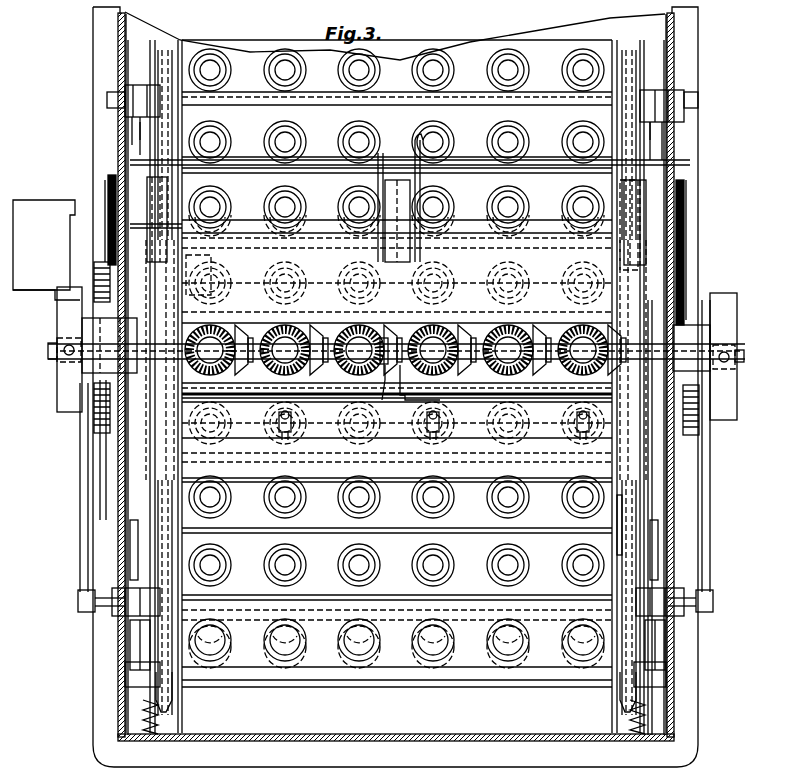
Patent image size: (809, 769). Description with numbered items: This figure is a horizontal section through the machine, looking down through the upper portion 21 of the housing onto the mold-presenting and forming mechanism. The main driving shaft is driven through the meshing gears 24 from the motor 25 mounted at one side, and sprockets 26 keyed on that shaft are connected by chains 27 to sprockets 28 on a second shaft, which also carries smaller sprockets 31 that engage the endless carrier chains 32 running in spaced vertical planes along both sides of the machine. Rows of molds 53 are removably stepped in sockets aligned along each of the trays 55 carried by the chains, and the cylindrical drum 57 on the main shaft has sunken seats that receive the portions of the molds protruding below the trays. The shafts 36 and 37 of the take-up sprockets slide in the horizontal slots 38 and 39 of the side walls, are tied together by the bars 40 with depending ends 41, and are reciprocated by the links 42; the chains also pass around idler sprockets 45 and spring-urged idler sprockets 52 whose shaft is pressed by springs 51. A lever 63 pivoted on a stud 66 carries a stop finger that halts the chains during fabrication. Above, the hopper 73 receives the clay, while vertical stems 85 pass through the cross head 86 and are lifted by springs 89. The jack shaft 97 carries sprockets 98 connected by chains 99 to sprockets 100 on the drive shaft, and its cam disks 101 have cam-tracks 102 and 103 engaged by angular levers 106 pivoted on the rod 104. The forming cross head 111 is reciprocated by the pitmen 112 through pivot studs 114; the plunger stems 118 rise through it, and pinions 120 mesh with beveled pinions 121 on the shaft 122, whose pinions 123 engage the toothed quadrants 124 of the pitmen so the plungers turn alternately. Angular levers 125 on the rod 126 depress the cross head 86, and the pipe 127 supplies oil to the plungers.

The upper portion of the housing 21 is at (672, 162).
The meshing gears 24 is at (94, 272).
The motor 25 is at (46, 250).
The sprockets 26 is at (125, 425).
The chains 27 is at (160, 497).
The sprockets 28 is at (640, 508).
The smaller sprockets 31 is at (135, 636).
The endless carrier chains 32 is at (158, 60).
The shaft 36 is at (105, 592).
The shaft 37 is at (515, 72).
The horizontal slot 38 is at (120, 658).
The horizontal slot 39 is at (120, 138).
The bars 40 is at (140, 127).
The depending ends 41 is at (140, 85).
The links 42 is at (80, 432).
The idler sprockets 45 is at (170, 52).
The springs 51 is at (140, 720).
The idler sprockets 52 is at (172, 700).
The molds 53 is at (358, 72).
The trays 55 is at (435, 72).
The cylindrical drum 57 is at (478, 460).
The lever 63 is at (660, 456).
The stud 66 is at (198, 280).
The hopper 73 is at (525, 488).
The vertical stems 85 is at (272, 438).
The cross head 86 is at (392, 425).
The springs 89 is at (570, 420).
The jack shaft 97 is at (535, 225).
The sprockets 98 is at (108, 176).
The chains 99 is at (108, 195).
The sprockets 100 is at (95, 400).
The cam disks 101 is at (205, 152).
The cam-track 102 is at (228, 187).
The cam-track 103 is at (130, 226).
The pivot rod 104 is at (460, 162).
The angular levers 106 is at (148, 195).
The cross head 111 is at (558, 328).
The pitmen 112 is at (52, 360).
The pivot studs 114 is at (58, 338).
The stems 118 is at (298, 330).
The pinions 120 is at (250, 308).
The beveled pinions 121 is at (478, 330).
The shaft 122 is at (384, 338).
The pinions 123 is at (58, 356).
The quadrants 124 is at (58, 395).
The angular levers 125 is at (278, 418).
The horizontal rod 126 is at (352, 392).
The pipe 127 is at (215, 285).